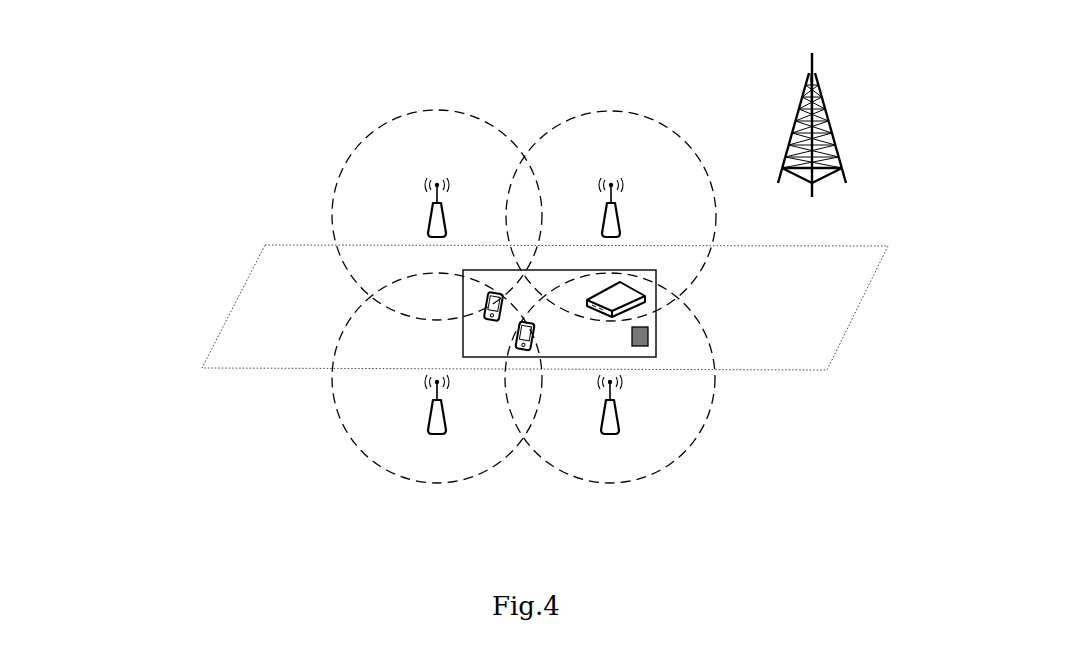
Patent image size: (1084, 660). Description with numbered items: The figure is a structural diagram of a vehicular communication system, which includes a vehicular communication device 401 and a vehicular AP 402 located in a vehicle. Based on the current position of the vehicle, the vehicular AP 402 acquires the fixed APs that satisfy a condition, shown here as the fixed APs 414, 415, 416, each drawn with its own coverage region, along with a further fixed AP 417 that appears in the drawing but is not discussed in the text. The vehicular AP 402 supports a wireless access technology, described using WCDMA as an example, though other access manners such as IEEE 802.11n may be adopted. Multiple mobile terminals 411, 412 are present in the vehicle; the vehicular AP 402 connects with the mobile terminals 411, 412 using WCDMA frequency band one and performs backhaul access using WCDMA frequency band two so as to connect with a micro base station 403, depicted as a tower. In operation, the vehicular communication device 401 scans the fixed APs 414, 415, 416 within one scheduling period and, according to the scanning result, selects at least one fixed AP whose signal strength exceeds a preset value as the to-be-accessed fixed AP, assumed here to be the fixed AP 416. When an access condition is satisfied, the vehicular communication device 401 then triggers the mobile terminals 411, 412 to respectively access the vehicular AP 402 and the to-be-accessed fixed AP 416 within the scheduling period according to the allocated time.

The vehicular communication device 401 is at (638, 350).
The vehicular AP 402 is at (643, 307).
The micro base station 403 is at (617, 298).
The mobile terminal 411 is at (487, 317).
The mobile terminal 412 is at (520, 340).
The fixed AP 414 is at (435, 173).
The fixed AP 415 is at (608, 173).
The fixed AP 416 is at (427, 435).
The fourth wireless access point 417 is at (600, 435).